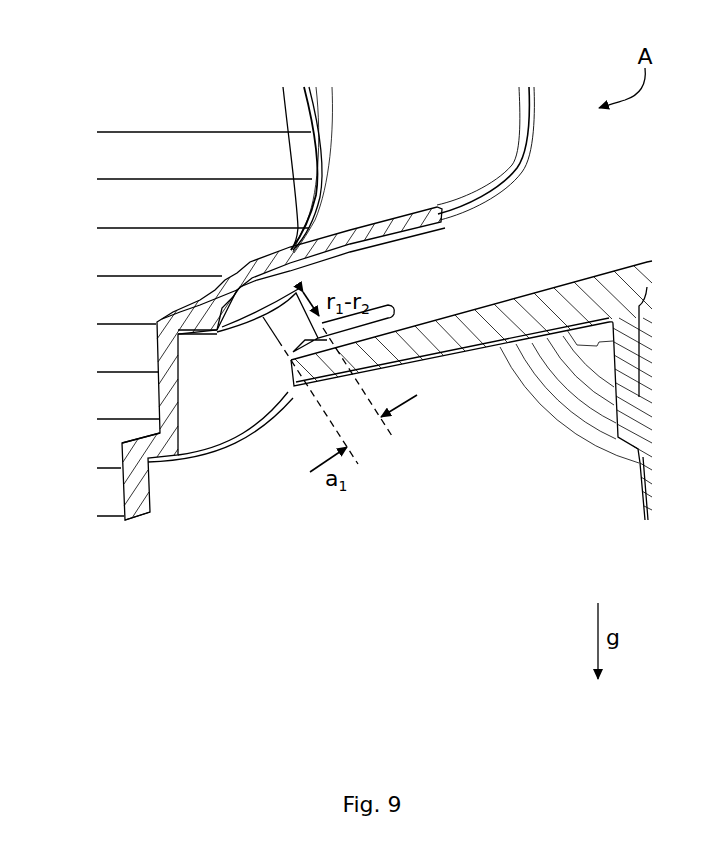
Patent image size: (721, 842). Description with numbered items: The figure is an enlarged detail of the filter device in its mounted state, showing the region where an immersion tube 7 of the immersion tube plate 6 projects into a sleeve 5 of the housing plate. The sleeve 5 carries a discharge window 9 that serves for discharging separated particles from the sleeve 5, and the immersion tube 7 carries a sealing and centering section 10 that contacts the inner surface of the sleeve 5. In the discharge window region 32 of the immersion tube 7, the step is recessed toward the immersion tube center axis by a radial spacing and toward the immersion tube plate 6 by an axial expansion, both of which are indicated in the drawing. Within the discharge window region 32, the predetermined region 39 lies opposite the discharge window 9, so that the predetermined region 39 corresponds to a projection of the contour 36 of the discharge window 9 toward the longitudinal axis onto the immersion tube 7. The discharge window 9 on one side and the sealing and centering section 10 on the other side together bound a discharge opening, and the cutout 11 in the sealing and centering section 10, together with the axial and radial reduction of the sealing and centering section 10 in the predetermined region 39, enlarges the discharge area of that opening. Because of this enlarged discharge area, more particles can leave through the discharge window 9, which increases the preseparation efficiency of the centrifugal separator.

The sleeve 5 is at (428, 342).
The immersion tube plate 6 is at (138, 510).
The immersion tube 7 is at (395, 214).
The discharge window 9 is at (197, 377).
The sealing and centering section 10 is at (343, 269).
The cutout 11 is at (238, 353).
The contour of the discharge window 36 is at (389, 307).
The discharge window region 32 is at (256, 391).
The predetermined region 39 is at (310, 390).